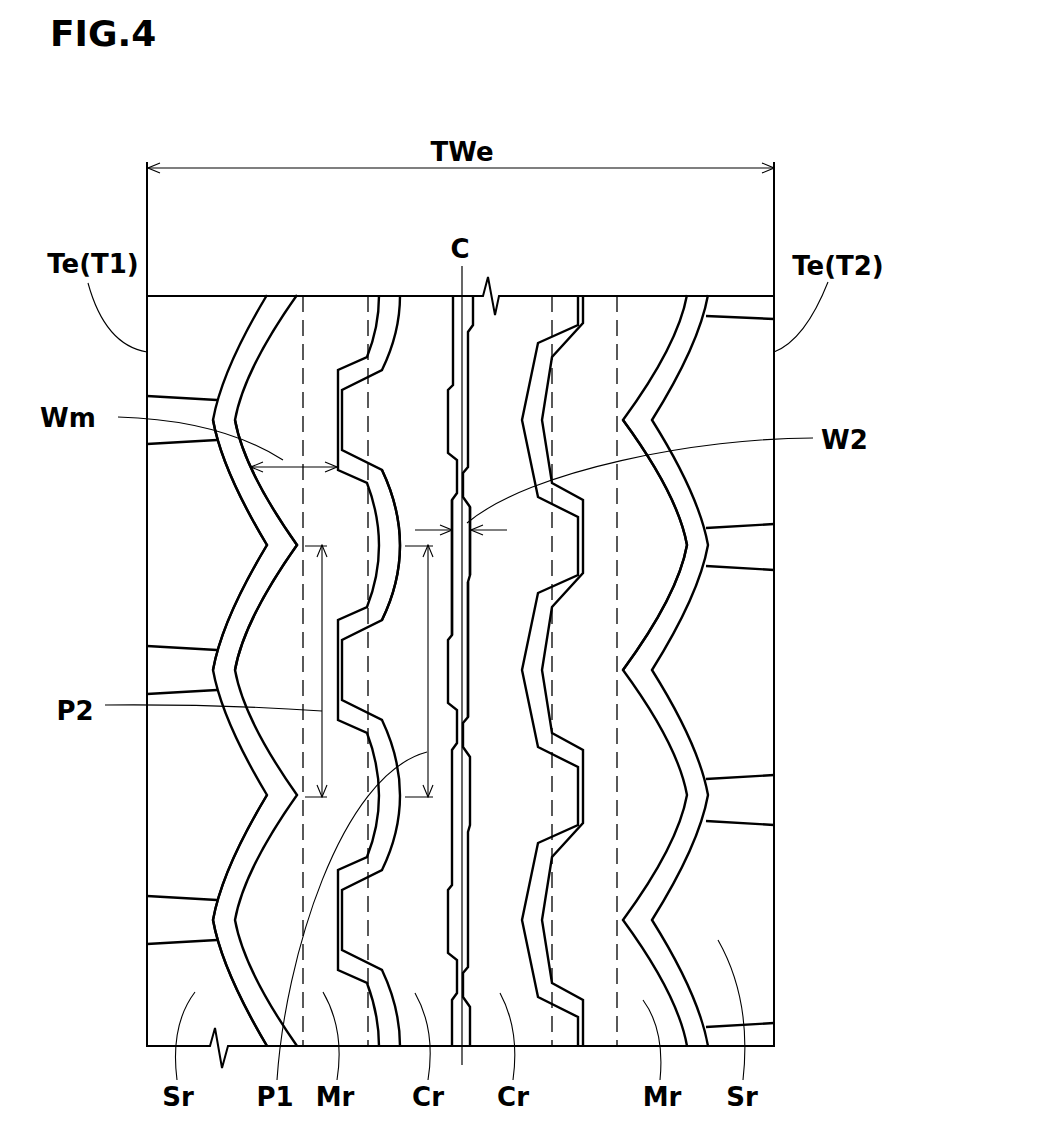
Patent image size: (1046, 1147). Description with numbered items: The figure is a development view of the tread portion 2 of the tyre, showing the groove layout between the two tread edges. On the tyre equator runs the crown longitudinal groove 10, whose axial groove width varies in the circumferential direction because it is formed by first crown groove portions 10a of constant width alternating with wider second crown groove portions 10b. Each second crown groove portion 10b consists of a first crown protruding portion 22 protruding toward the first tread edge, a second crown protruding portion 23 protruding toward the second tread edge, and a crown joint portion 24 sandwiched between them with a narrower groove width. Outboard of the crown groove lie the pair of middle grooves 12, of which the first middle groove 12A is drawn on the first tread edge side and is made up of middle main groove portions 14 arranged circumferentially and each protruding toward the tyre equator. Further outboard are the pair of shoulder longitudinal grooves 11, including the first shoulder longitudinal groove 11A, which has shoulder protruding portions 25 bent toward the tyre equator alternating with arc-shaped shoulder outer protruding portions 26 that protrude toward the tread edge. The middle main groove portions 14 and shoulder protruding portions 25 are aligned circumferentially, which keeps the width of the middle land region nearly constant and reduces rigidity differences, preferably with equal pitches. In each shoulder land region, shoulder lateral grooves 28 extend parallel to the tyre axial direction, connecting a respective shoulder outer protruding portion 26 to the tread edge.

The tread portion 2 is at (737, 152).
The crown longitudinal groove 10 is at (455, 352).
The first crown groove portions 10a is at (460, 733).
The second crown groove portions 10b is at (468, 795).
The shoulder longitudinal grooves 11 is at (668, 372).
The first shoulder longitudinal groove 11A is at (242, 350).
The middle grooves 12 is at (563, 342).
The first middle groove 12A is at (355, 372).
The middle main groove portions 14 is at (383, 510).
The first crown protruding portion 22 is at (453, 673).
The second crown protruding portion 23 is at (465, 560).
The crown joint portion 24 is at (465, 597).
The shoulder protruding portions 25 is at (283, 547).
The shoulder outer protruding portions 26 is at (222, 920).
The shoulder lateral grooves 28 is at (182, 910).